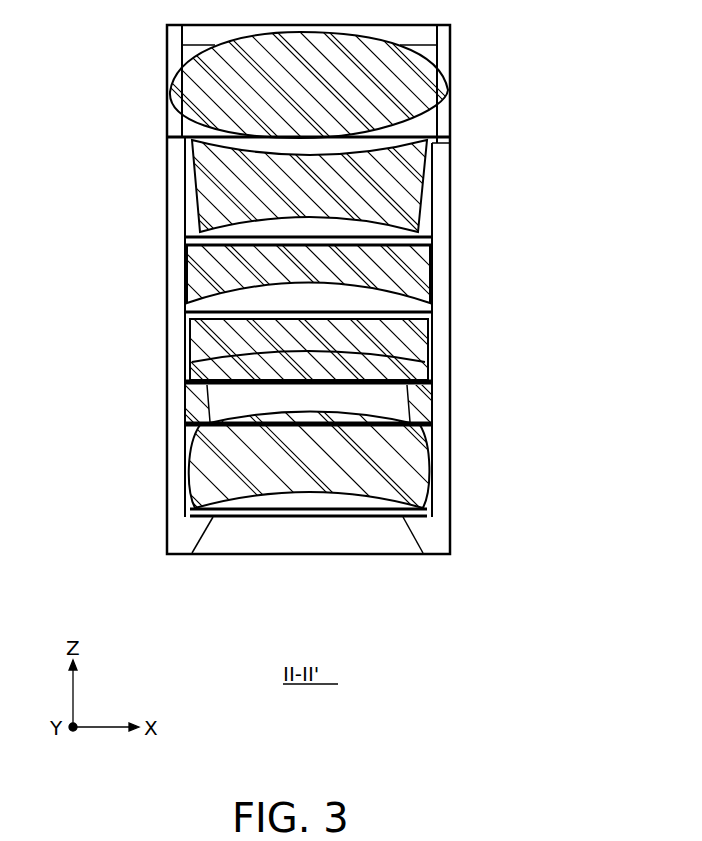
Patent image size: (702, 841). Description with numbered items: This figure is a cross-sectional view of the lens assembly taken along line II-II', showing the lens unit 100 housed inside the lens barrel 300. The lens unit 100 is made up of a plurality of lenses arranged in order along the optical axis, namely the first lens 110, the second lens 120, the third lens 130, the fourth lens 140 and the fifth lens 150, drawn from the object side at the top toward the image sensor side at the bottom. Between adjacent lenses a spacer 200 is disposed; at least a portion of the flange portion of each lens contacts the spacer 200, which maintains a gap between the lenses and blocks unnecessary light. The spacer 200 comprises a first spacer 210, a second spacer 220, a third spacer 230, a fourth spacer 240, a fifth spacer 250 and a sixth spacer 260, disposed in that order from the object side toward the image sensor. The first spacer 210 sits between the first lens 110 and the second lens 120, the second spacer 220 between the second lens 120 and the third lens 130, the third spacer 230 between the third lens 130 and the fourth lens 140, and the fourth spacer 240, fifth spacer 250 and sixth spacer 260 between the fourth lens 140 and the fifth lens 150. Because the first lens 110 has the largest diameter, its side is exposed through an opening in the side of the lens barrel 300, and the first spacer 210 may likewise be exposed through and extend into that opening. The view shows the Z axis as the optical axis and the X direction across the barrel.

The lens unit 100 is at (551, 88).
The first lens 110 is at (440, 92).
The second lens 120 is at (430, 186).
The third lens 130 is at (430, 276).
The fourth lens 140 is at (430, 346).
The fifth lens 150 is at (432, 482).
The spacer 200 is at (66, 98).
The first spacer 210 is at (183, 134).
The second spacer 220 is at (196, 230).
The third spacer 230 is at (186, 246).
The fourth spacer 240 is at (188, 316).
The fifth spacer 250 is at (195, 400).
The sixth spacer 260 is at (192, 422).
The lens barrel 300 is at (187, 554).